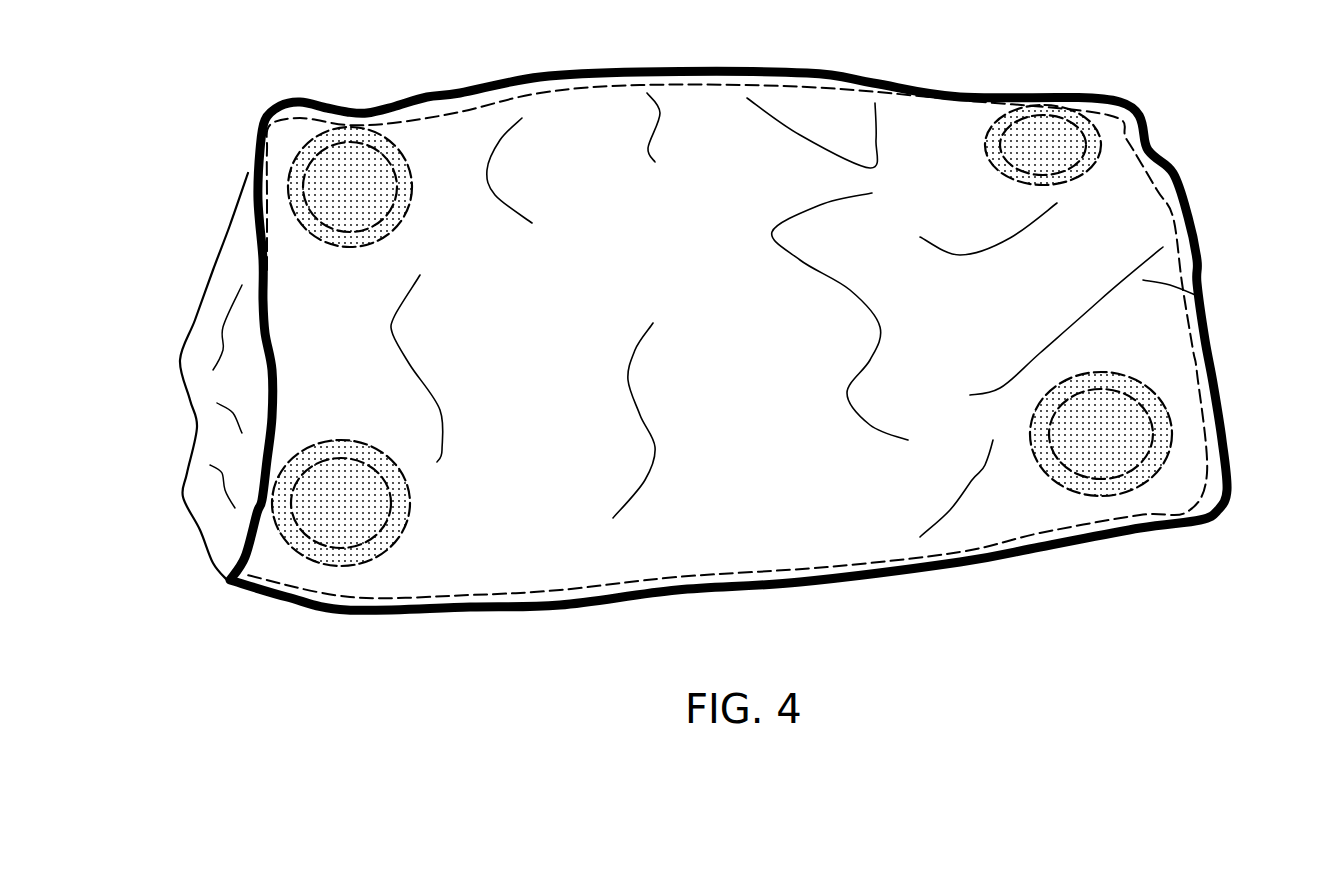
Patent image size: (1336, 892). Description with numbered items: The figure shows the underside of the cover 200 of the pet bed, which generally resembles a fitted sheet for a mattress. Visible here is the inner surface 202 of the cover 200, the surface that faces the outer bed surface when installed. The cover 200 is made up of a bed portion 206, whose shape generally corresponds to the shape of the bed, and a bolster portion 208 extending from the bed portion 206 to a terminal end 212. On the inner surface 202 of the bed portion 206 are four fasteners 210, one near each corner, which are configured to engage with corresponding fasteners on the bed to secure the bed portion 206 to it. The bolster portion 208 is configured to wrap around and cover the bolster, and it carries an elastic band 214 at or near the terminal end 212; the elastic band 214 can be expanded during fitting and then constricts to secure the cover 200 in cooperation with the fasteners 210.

The cover 200 is at (1128, 57).
The inner surface 202 is at (1277, 317).
The bed portion 206 is at (771, 477).
The bolster portion 208 is at (205, 471).
The fastener 210 is at (322, 163).
The terminal end 212 is at (192, 406).
The elastic band 214 is at (180, 360).